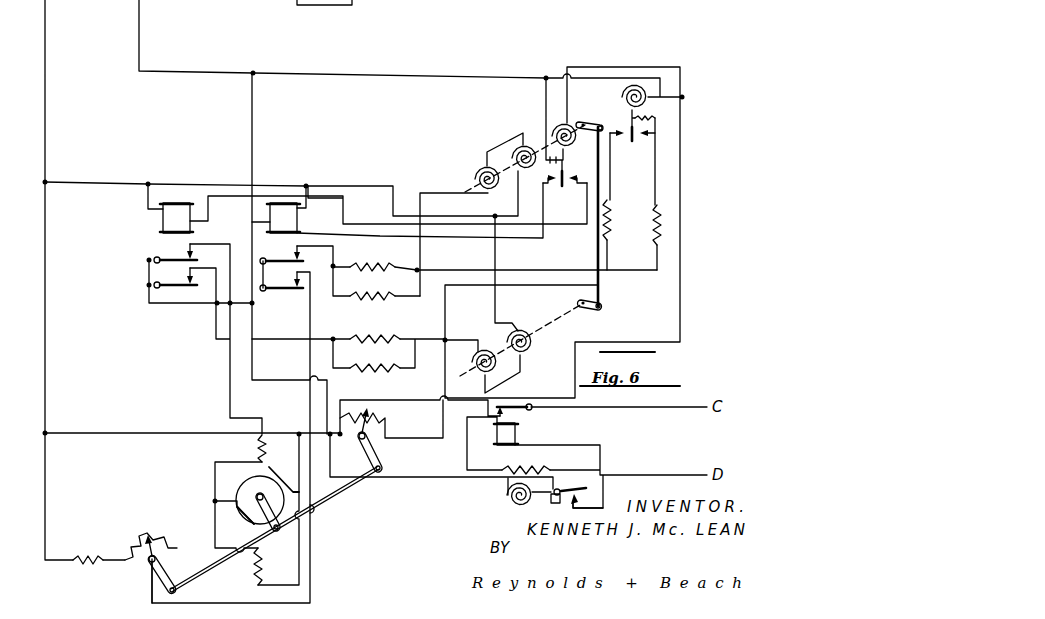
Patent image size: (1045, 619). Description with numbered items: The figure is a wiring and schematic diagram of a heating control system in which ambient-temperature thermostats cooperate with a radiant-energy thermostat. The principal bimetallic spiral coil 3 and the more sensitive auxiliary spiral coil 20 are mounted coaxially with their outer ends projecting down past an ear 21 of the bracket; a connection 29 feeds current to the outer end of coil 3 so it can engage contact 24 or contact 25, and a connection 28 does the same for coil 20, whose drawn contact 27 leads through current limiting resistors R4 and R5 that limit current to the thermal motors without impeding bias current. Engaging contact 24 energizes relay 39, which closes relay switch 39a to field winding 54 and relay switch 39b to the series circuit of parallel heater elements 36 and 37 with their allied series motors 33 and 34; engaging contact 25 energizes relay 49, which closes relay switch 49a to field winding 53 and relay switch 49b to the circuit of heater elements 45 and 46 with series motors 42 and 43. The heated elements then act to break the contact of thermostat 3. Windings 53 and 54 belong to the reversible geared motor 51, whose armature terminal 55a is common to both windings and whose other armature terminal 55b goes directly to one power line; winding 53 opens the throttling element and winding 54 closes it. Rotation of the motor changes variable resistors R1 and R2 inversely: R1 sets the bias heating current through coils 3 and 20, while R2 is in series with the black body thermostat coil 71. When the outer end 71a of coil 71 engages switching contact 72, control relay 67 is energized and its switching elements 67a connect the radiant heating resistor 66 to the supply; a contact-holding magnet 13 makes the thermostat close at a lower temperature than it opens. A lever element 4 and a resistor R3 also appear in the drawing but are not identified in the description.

The auxiliary bimetallic thermal sensitive spiral coil 20 is at (648, 92).
The connection 28 is at (656, 117).
The principal bimetallic thermal sensitive spiral coil 3 is at (577, 125).
The series motor 34 is at (527, 143).
The series motor 33 is at (480, 176).
The ear 21 is at (619, 142).
The contact 27 is at (648, 141).
The connection 29 is at (550, 174).
The contact 24 is at (553, 191).
The contact 25 is at (577, 190).
The current limiting resistor R4 is at (621, 228).
The current limiting resistor R5 is at (662, 232).
The relay 49 is at (165, 221).
The relay 39 is at (297, 221).
The relay switch 49a is at (178, 256).
The relay switch 49b is at (178, 284).
The relay switch 39a is at (292, 260).
The relay switch 39b is at (281, 281).
The heater element 36 is at (385, 255).
The heater element 37 is at (392, 300).
The heater element 45 is at (358, 330).
The heater element 46 is at (378, 372).
The lever link 4 is at (560, 318).
The series motor 42 is at (473, 375).
The series motor 43 is at (533, 350).
The switching elements 67a is at (508, 411).
The control relay 67 is at (513, 433).
The electrical resistor 66 is at (545, 470).
The outer end of thermostat coil 71a is at (580, 492).
The thermostat switching contact 72 is at (587, 502).
The black body thermostat coil 71 is at (508, 494).
The contact-holding magnet 13 is at (551, 500).
The variable resistor R1 is at (391, 436).
The field winding 53 is at (258, 452).
The armature terminal 55b is at (272, 470).
The geared electric motor mechanism 51 is at (245, 488).
The armature terminal 55a is at (240, 514).
The field winding 54 is at (262, 565).
The variable resistor R2 is at (151, 553).
The resistor R3 is at (78, 556).